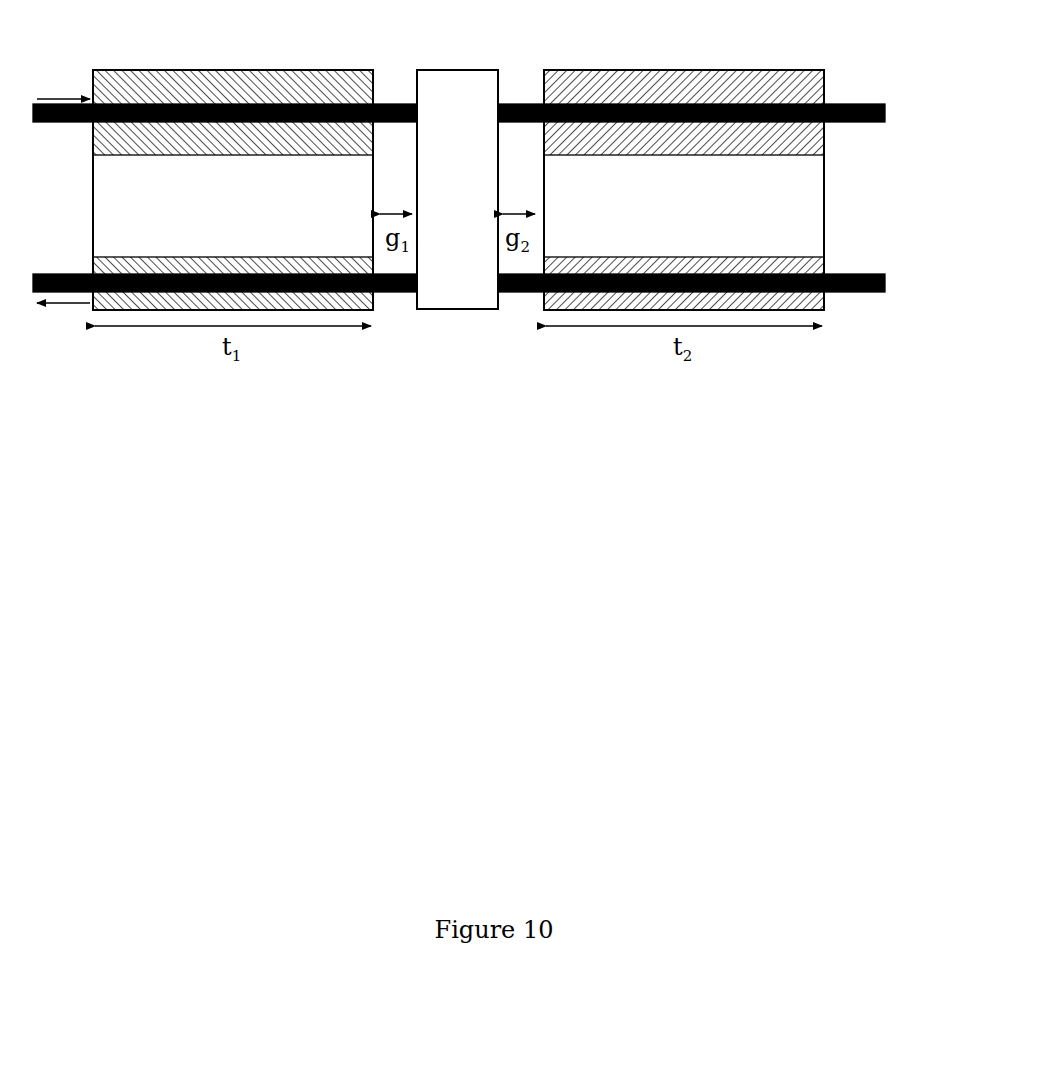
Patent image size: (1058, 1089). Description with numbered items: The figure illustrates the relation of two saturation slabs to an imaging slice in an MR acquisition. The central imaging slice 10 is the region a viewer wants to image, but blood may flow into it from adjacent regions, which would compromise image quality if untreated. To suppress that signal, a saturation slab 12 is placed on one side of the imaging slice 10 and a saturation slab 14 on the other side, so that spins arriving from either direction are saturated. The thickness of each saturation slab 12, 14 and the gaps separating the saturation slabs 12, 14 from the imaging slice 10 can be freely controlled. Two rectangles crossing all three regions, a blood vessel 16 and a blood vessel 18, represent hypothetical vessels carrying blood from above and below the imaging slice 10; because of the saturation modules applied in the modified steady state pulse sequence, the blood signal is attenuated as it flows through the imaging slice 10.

The imaging slice 10 is at (441, 206).
The saturation slab 12 is at (217, 239).
The saturation slab 14 is at (668, 239).
The blood vessel 16 is at (868, 97).
The blood vessel 18 is at (862, 306).